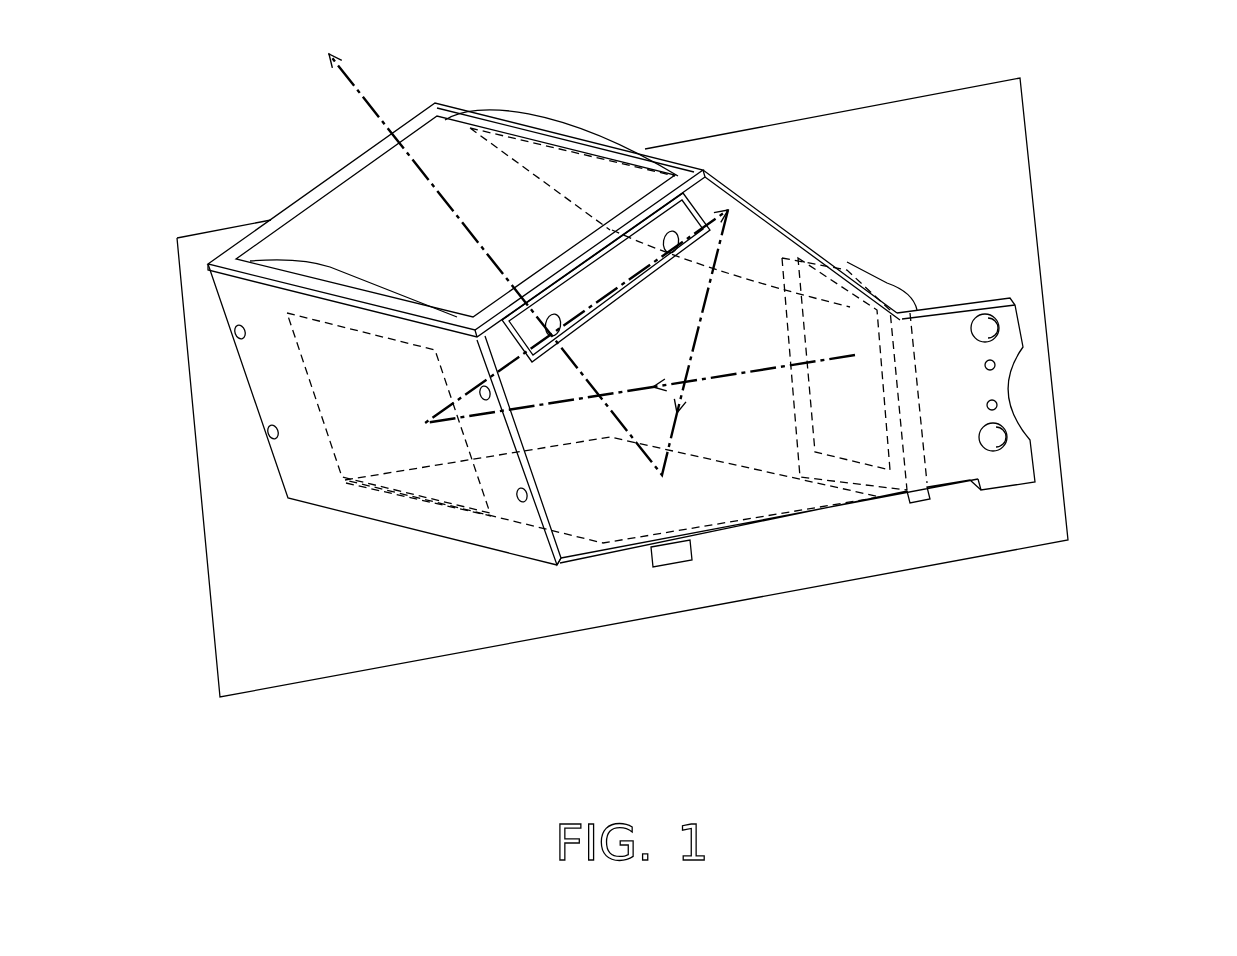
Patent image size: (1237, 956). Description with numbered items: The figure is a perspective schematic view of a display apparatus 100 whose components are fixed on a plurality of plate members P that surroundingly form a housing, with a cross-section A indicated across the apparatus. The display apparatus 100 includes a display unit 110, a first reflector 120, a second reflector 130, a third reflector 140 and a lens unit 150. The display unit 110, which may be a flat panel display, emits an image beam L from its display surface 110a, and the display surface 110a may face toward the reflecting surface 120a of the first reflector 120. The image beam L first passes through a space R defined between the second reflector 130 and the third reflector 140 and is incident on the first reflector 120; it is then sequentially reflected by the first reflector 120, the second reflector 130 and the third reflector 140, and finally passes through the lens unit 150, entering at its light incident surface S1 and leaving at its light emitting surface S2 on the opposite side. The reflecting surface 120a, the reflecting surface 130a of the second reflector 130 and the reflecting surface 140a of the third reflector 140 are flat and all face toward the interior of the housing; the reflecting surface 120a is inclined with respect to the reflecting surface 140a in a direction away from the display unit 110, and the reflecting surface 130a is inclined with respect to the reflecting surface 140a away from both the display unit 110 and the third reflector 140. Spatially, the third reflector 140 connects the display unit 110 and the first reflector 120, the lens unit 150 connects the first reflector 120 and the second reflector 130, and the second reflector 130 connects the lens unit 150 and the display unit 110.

The display apparatus 100 is at (702, 389).
The display unit 110 is at (893, 281).
The display surface 110a is at (852, 326).
The first reflector 120 is at (350, 457).
The reflecting surface 120a is at (497, 338).
The second reflector 130 is at (723, 180).
The reflecting surface 130a is at (742, 229).
The third reflector 140 is at (752, 517).
The reflecting surface 140a is at (672, 515).
The lens unit 150 is at (560, 133).
The image beam L is at (362, 92).
The light incident surface S1 is at (450, 470).
The light emitting surface S2 is at (362, 184).
The plate members P is at (686, 170).
The cross-section A is at (198, 487).
The space R is at (747, 414).